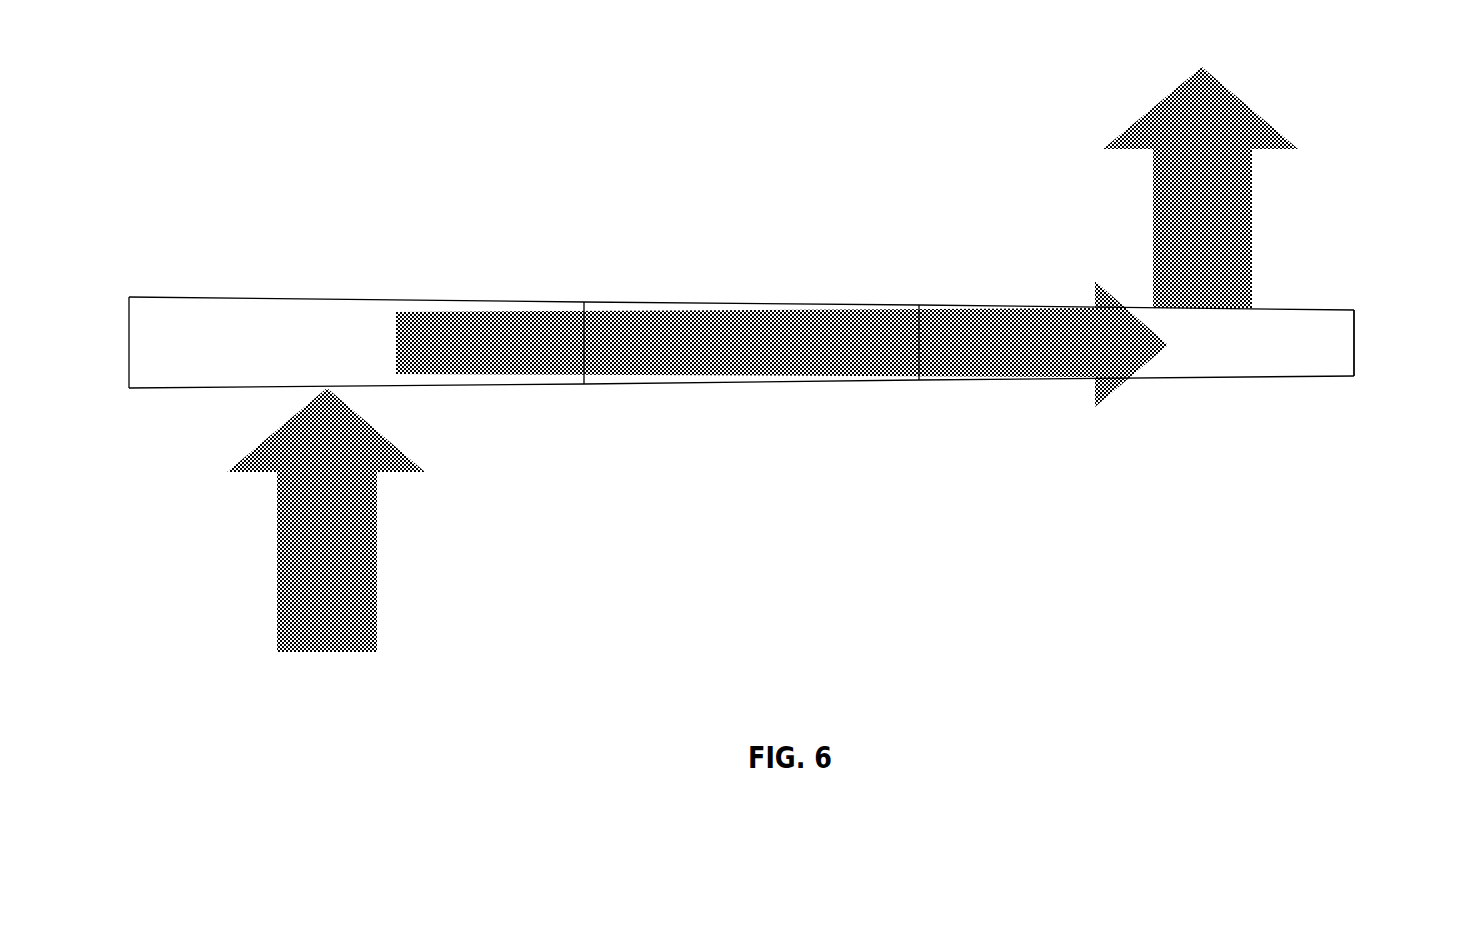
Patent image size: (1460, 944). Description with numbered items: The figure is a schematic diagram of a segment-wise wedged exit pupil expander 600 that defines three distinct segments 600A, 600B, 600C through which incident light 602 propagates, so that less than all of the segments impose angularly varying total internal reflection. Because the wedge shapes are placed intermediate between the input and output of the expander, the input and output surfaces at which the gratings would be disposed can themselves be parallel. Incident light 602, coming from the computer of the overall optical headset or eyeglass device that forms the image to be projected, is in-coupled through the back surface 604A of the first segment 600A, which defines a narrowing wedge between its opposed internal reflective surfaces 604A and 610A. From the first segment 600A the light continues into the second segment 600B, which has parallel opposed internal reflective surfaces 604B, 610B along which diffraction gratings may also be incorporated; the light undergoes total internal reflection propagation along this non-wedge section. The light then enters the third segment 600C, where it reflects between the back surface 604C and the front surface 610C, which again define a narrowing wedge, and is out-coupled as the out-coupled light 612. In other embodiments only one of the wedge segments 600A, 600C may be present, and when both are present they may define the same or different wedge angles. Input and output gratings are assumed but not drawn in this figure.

The segment-wise wedged exit pupil expander 600 is at (260, 150).
The first segment 600A is at (575, 282).
The second segment 600B is at (918, 405).
The third segment 600C is at (1335, 405).
The incident light 602 is at (326, 543).
The back surface of the first segment 604A is at (173, 385).
The back surface of the second segment 604B is at (872, 380).
The back surface of the third segment 604C is at (1283, 378).
The front surface of the first segment 610A is at (173, 300).
The front surface of the second segment 610B is at (669, 302).
The front surface of the third segment 610C is at (1298, 308).
The out-coupled light 612 is at (1209, 168).